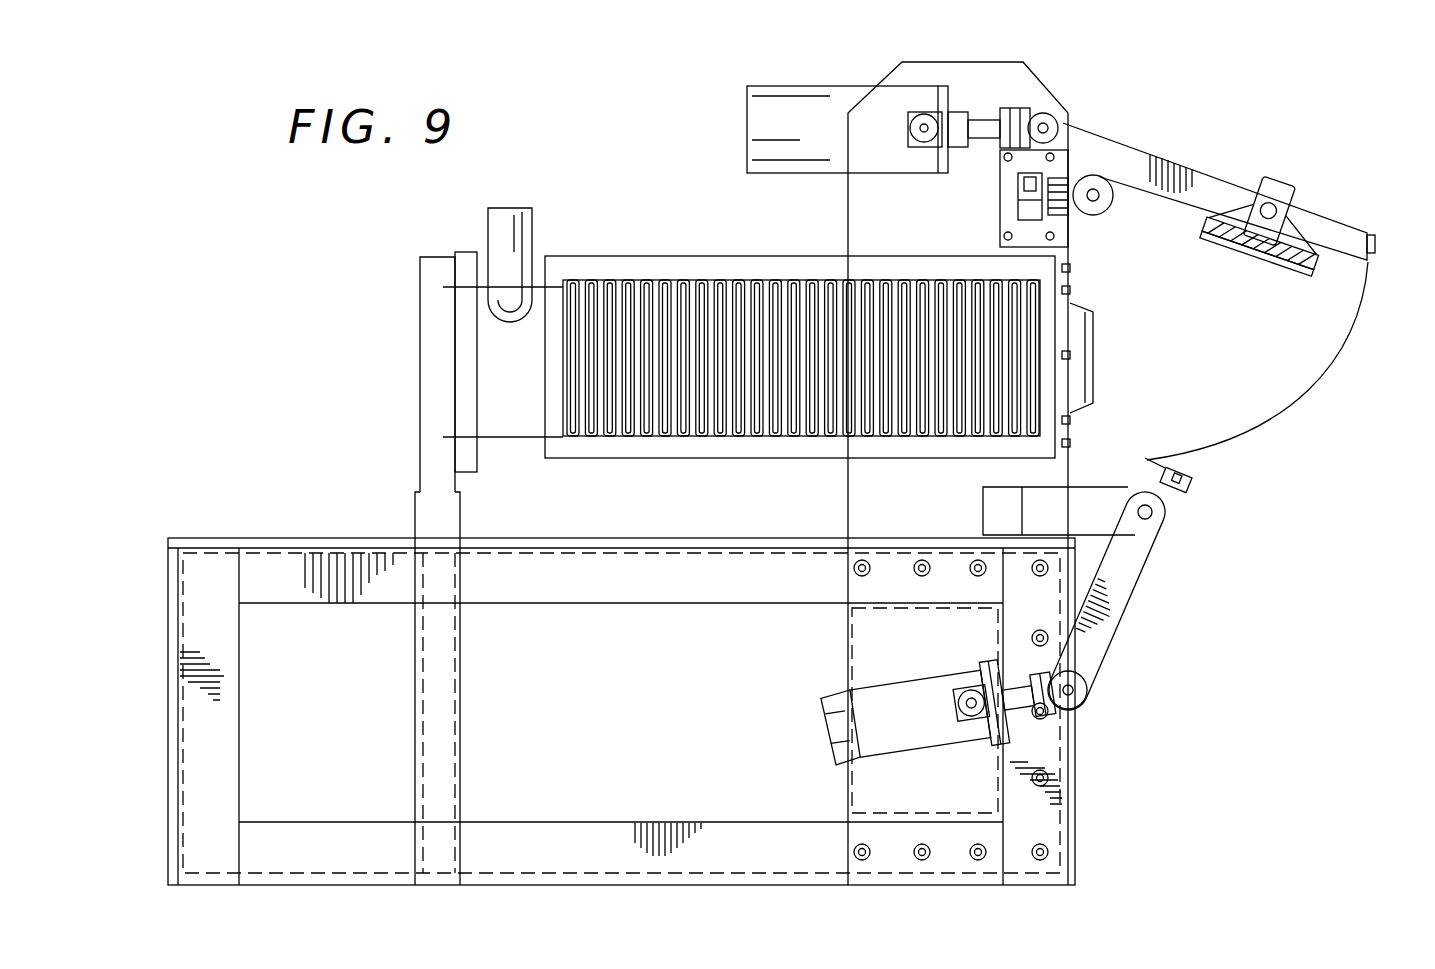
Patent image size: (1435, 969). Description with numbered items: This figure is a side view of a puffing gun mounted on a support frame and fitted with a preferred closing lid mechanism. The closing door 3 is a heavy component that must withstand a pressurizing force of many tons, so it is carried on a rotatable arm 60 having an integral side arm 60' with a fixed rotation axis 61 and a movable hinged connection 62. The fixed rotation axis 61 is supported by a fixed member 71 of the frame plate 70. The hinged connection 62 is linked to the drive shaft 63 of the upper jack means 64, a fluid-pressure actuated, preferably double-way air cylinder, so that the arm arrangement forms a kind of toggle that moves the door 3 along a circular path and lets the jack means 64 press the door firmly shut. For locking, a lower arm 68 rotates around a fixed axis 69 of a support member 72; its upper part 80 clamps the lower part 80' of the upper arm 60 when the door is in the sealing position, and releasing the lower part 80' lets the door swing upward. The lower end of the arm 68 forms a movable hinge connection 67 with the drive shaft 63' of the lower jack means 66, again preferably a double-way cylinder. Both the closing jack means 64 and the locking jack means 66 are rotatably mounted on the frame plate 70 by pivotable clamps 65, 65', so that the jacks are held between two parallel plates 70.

The closing door 3 is at (1227, 233).
The rotatable arm 60 is at (1219, 150).
The side arm 60' is at (1219, 168).
The fixed rotation axis 61 is at (1098, 205).
The movable hinged connection 62 is at (1043, 113).
The drive shaft 63 is at (993, 81).
The drive shaft 63' is at (1091, 724).
The jack means 64 is at (779, 102).
The pivotable clamp 65 is at (902, 80).
The pivotable clamp 65' is at (953, 738).
The jack means 66 is at (893, 700).
The movable hinge connection 67 is at (1087, 695).
The lower arm 68 is at (1137, 583).
The fixed axis 69 is at (1153, 512).
The frame plate 70 is at (847, 210).
The fixed member 71 is at (1018, 200).
The support member 72 is at (1102, 503).
The upper part of arm 80 is at (1214, 485).
The lower part of upper arm 80' is at (1286, 311).